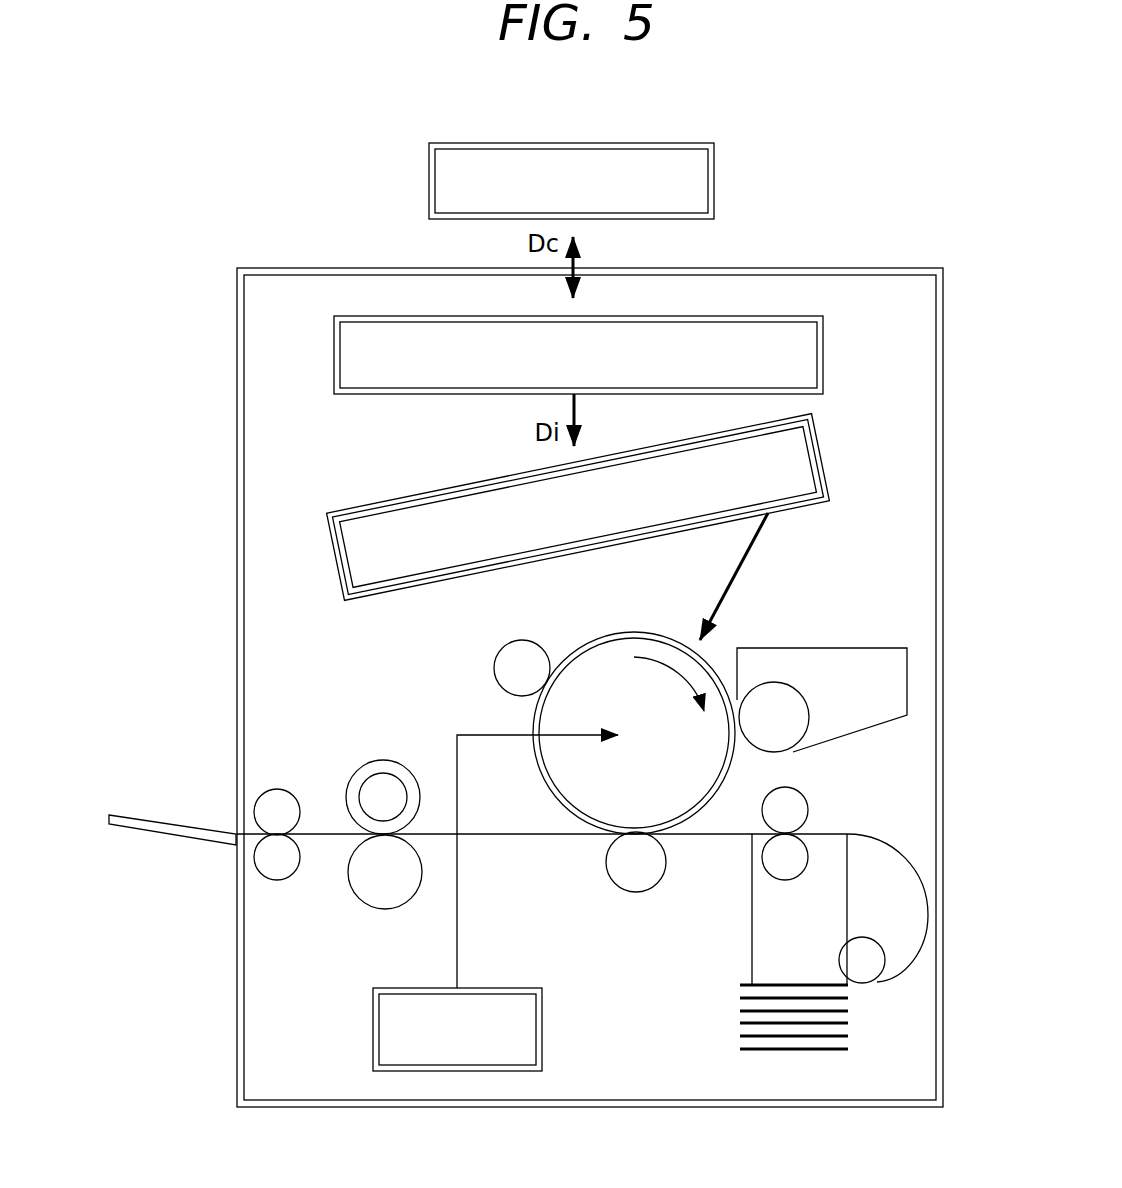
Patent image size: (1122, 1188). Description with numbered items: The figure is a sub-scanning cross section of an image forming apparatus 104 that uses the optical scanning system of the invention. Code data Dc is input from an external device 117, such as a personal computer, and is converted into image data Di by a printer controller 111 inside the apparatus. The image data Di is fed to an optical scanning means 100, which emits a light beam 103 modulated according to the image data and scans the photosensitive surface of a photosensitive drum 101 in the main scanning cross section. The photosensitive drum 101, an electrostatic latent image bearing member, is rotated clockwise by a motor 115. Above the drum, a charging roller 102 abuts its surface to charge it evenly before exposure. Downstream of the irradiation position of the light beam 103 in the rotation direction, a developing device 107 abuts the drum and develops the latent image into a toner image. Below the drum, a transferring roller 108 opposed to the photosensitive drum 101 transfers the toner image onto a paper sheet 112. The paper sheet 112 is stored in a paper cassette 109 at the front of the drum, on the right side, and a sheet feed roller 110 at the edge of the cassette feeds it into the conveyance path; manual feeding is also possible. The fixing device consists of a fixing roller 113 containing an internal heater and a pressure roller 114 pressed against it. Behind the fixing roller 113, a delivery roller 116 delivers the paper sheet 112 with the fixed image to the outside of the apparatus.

The optical scanning means 100 is at (425, 496).
The photosensitive drum 101 is at (717, 762).
The charging roller 102 is at (519, 649).
The light beam 103 is at (745, 572).
The image forming apparatus 104 is at (893, 248).
The developing device 107 is at (907, 660).
The transferring roller 108 is at (641, 882).
The paper cassette 109 is at (728, 1023).
The sheet feed roller 110 is at (858, 962).
The printer controller 111 is at (823, 337).
The paper sheet 112 is at (505, 842).
The fixing roller 113 is at (377, 792).
The pressure roller 114 is at (361, 880).
The motor 115 is at (373, 1030).
The delivery roller 116 is at (285, 807).
The external device 117 is at (714, 163).